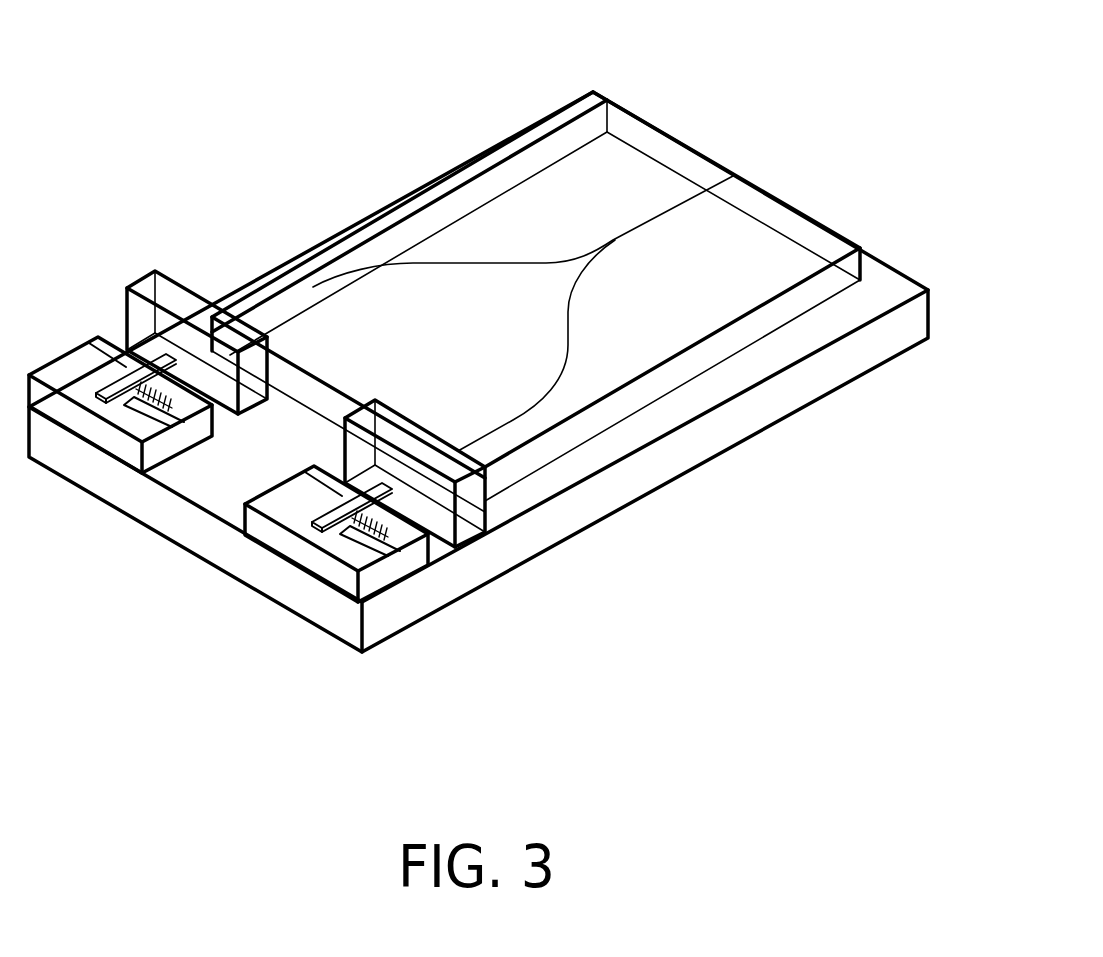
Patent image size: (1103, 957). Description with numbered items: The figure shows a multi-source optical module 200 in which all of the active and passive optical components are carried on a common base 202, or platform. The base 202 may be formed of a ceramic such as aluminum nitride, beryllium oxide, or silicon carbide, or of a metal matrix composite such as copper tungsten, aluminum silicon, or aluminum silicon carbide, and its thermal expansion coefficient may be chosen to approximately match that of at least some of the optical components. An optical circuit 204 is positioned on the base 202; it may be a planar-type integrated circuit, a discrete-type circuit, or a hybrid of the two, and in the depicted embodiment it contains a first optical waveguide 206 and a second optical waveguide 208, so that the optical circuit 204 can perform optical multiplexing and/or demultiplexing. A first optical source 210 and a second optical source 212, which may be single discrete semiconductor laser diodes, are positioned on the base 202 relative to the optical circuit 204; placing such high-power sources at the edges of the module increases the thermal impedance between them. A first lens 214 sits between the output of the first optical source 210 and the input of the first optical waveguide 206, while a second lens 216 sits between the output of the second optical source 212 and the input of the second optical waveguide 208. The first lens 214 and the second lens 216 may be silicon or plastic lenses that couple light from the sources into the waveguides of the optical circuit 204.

The multi-source optical module 200 is at (677, 51).
The base 202 is at (690, 452).
The optical circuit 204 is at (375, 225).
The first optical waveguide 206 is at (508, 414).
The second optical waveguide 208 is at (312, 285).
The first optical source 210 is at (313, 532).
The second optical source 212 is at (97, 405).
The first lens 214 is at (480, 545).
The second lens 216 is at (133, 282).